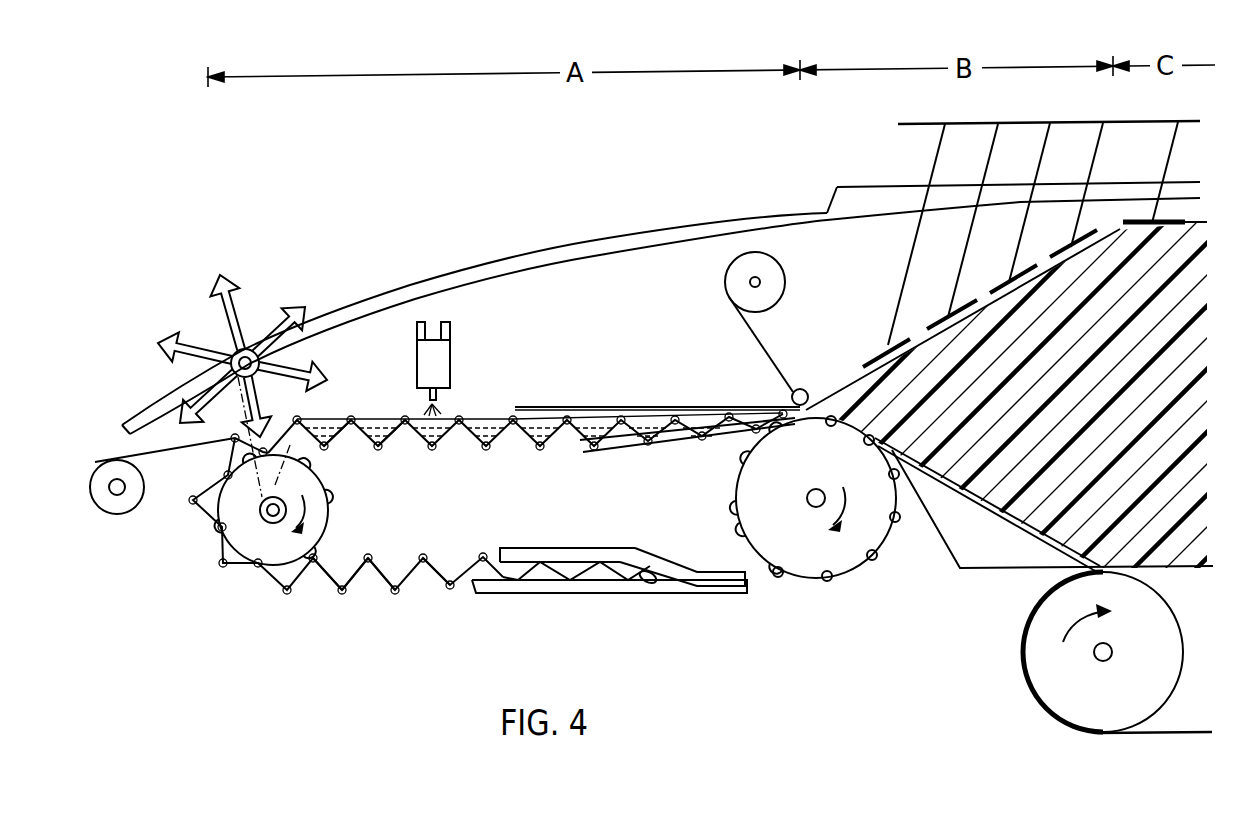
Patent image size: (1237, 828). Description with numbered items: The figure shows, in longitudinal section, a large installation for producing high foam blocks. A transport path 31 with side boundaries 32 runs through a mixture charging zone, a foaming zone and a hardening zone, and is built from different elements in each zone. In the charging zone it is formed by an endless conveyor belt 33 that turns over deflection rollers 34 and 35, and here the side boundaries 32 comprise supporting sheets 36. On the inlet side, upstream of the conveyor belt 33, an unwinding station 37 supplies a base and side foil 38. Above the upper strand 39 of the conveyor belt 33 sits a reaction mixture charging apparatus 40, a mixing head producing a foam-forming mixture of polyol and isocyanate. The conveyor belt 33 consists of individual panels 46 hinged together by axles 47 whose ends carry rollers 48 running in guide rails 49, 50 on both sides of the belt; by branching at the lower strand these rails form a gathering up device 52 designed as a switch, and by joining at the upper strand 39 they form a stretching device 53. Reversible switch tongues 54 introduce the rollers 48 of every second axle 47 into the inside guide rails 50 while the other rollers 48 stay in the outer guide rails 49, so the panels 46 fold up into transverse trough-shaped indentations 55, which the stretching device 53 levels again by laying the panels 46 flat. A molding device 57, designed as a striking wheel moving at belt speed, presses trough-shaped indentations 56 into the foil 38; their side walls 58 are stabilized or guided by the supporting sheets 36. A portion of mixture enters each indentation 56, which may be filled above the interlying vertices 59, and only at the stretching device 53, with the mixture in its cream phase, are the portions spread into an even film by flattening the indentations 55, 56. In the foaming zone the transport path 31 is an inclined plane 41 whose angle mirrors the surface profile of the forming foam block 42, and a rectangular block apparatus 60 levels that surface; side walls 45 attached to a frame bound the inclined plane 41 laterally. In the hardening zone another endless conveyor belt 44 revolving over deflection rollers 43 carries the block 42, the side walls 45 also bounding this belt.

The transport path 31 is at (576, 400).
The side boundaries 32 is at (792, 206).
The endless conveyor belt 33 is at (230, 578).
The deflection roller 34 is at (327, 522).
The deflection roller 35 is at (758, 530).
The supporting sheets 36 is at (446, 280).
The unwinding station 37 is at (128, 505).
The base and side foil 38 is at (363, 345).
The upper strand 39 is at (516, 449).
The reaction mixture charging apparatus 40 is at (441, 364).
The inclined plane 41 is at (1030, 527).
The foam block 42 is at (1120, 232).
The deflection rollers 43 is at (1055, 701).
The endless conveyor belt 44 is at (1168, 733).
The cover with slats 45 is at (886, 205).
The panels 46 is at (370, 577).
The axles 47 is at (318, 596).
The rollers 48 is at (342, 594).
The outer guide rails 49 is at (596, 590).
The inside guide rails 50 is at (545, 555).
The gathering up device 52 is at (618, 542).
The stretching device 53 is at (684, 400).
The reversible switch tongues 54 is at (652, 588).
The trough-shaped indentations 55 is at (430, 570).
The trough-shaped indentations 56 is at (342, 426).
The molding device 57 is at (237, 306).
The side walls 58 is at (393, 431).
The vertices 59 is at (609, 588).
The rectangular block apparatus 60 is at (890, 318).